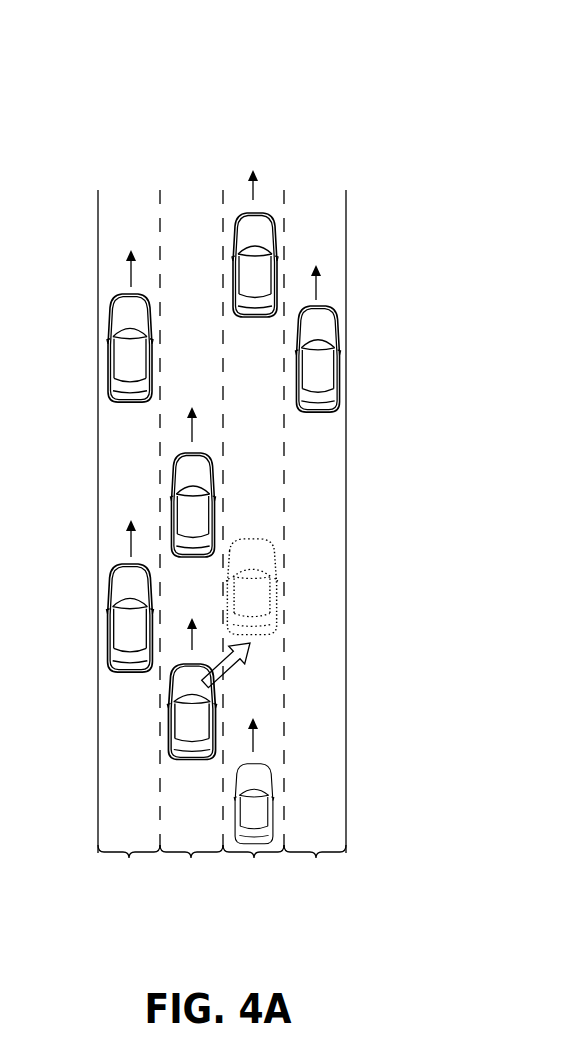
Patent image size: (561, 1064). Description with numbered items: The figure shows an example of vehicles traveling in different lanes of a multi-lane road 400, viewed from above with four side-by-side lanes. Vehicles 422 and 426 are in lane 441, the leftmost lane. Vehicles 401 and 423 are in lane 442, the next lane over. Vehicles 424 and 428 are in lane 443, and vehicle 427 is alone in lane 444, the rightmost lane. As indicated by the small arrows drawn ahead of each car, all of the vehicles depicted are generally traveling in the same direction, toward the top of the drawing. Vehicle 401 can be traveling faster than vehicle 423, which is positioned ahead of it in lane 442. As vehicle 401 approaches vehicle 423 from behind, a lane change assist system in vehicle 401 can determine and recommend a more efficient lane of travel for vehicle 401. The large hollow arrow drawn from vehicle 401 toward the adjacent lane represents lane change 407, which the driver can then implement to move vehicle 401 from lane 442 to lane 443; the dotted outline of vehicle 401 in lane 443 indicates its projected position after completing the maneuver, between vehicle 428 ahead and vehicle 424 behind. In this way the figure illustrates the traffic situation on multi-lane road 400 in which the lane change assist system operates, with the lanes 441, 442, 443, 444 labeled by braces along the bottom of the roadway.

The multi-lane road 400 is at (178, 42).
The vehicle 401 is at (188, 717).
The lane change 407 is at (232, 668).
The vehicle 422 is at (125, 625).
The vehicle 423 is at (190, 508).
The vehicle 424 is at (257, 810).
The vehicle 426 is at (128, 360).
The vehicle 427 is at (322, 372).
The vehicle 428 is at (250, 277).
The lane 441 is at (129, 550).
The lane 442 is at (191, 550).
The lane 443 is at (253, 550).
The lane 444 is at (315, 550).